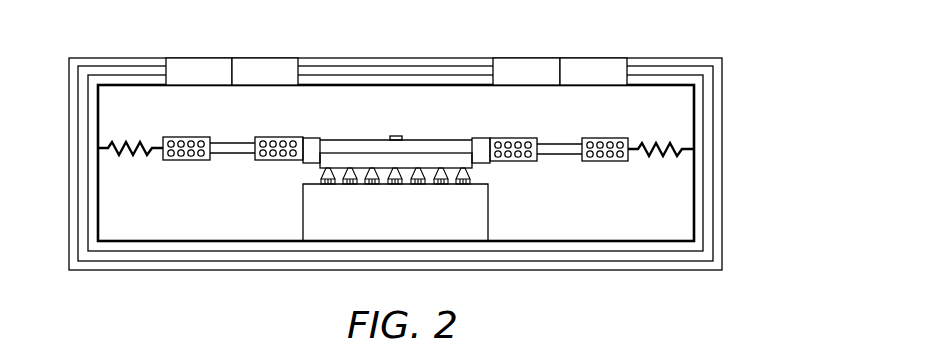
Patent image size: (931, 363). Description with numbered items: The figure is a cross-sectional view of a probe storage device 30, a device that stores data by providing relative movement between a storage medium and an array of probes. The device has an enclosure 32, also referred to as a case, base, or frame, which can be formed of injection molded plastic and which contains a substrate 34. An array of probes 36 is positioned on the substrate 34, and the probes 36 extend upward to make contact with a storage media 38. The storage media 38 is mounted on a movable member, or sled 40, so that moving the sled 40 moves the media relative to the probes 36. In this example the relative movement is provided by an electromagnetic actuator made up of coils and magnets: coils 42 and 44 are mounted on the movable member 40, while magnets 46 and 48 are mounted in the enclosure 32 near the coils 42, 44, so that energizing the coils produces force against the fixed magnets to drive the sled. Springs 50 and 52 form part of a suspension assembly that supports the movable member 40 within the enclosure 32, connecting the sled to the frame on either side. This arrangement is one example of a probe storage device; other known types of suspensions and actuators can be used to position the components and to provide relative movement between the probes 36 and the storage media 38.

The probe storage device 30 is at (703, 42).
The enclosure 32 is at (718, 228).
The substrate 34 is at (325, 220).
The array of probes 36 is at (394, 186).
The storage media 38 is at (372, 165).
The movable member 40 is at (452, 150).
The coil 42 is at (185, 162).
The coil 44 is at (515, 164).
The magnet 46 is at (215, 62).
The magnet 48 is at (576, 62).
The spring 50 is at (129, 143).
The spring 52 is at (661, 141).